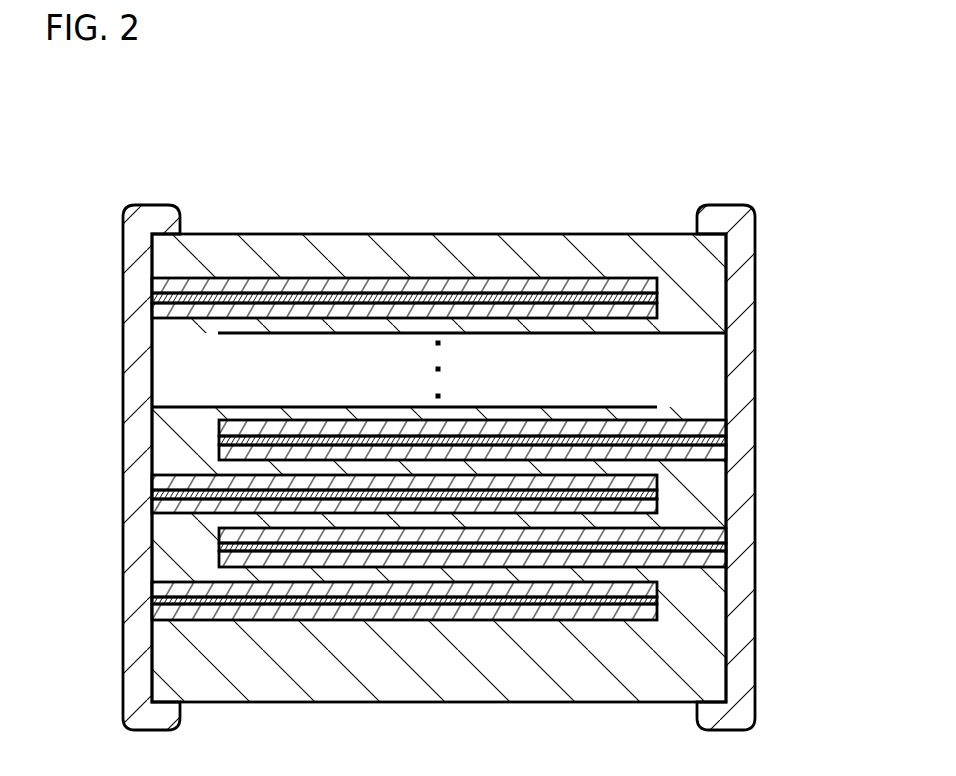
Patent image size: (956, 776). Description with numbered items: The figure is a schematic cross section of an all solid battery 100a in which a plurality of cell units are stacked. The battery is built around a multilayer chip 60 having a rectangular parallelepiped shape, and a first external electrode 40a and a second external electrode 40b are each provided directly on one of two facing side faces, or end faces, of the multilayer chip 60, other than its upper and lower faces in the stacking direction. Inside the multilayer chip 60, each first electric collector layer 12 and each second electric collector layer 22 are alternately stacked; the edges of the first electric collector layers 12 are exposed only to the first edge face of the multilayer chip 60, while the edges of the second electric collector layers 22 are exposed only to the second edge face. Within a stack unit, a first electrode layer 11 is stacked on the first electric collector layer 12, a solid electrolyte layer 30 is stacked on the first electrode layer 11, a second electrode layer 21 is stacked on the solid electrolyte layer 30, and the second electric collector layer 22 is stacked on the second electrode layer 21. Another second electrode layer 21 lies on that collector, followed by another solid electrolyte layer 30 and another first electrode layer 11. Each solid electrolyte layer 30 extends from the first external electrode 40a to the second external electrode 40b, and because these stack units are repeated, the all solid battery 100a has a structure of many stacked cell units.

The all solid battery 100a is at (865, 103).
The multilayer chip 60 is at (551, 223).
The solid electrolyte layer 30 is at (327, 575).
The first electrode layer 11 is at (165, 483).
The first electric collector layer 12 is at (165, 494).
The second electrode layer 21 is at (717, 531).
The second electric collector layer 22 is at (722, 547).
The first external electrode 40a is at (123, 310).
The second external electrode 40b is at (755, 312).